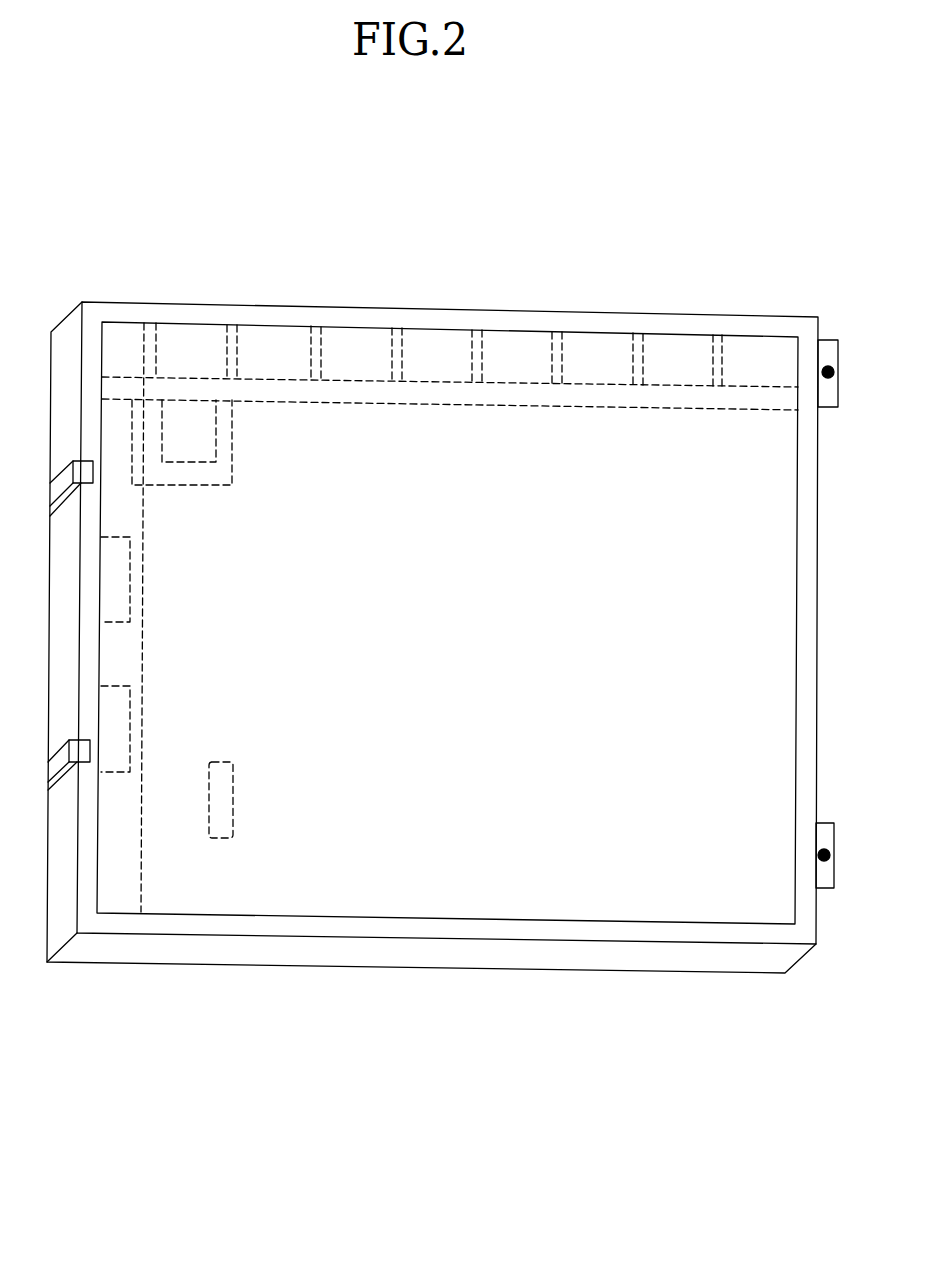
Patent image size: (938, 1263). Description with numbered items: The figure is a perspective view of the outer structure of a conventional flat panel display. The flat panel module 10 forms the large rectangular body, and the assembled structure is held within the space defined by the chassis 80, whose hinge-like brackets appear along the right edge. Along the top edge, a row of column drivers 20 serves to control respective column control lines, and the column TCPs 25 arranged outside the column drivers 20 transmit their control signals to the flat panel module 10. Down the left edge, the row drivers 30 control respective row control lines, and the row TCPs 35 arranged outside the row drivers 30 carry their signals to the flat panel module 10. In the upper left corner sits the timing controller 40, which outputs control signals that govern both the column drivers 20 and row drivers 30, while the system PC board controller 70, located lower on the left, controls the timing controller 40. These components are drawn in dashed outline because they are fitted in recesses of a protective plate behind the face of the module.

The flat panel module 10 is at (487, 683).
The column drivers 20 is at (150, 333).
The column TCPs 25 is at (350, 352).
The row drivers 30 is at (122, 887).
The row TCPs 35 is at (118, 583).
The timing controller 40 is at (192, 415).
The system PC board controller 70 is at (220, 833).
The chassis 80 is at (798, 932).